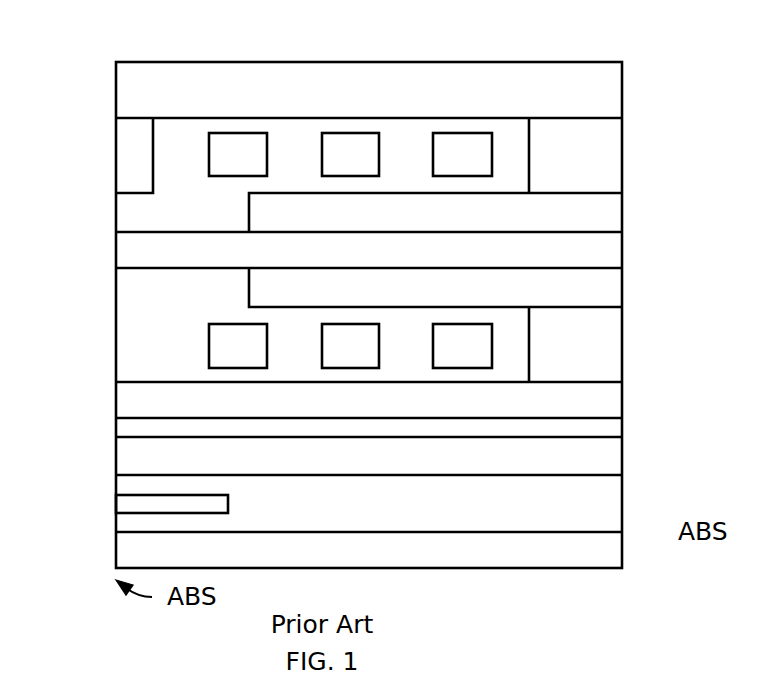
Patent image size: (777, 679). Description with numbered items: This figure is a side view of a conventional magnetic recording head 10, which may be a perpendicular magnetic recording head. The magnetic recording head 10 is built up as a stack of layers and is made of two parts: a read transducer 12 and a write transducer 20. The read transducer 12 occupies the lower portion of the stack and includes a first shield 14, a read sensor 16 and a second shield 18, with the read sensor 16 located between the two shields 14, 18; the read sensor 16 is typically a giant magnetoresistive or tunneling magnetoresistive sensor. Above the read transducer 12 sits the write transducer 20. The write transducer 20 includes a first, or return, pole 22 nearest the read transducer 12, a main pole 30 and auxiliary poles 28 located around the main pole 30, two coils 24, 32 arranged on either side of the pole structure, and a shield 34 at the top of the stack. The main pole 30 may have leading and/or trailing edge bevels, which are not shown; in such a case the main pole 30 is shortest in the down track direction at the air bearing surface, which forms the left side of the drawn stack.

The magnetic recording head 10 is at (306, 38).
The read transducer 12 is at (84, 470).
The shield 14 is at (622, 550).
The read sensor 16 is at (116, 503).
The shield 18 is at (622, 455).
The write transducer 20 is at (86, 182).
The return pole 22 is at (116, 400).
The coil 24 is at (152, 362).
The auxiliary pole 28 is at (622, 208).
The main pole 30 is at (116, 252).
The coil 32 is at (162, 146).
The shield 34 is at (622, 75).